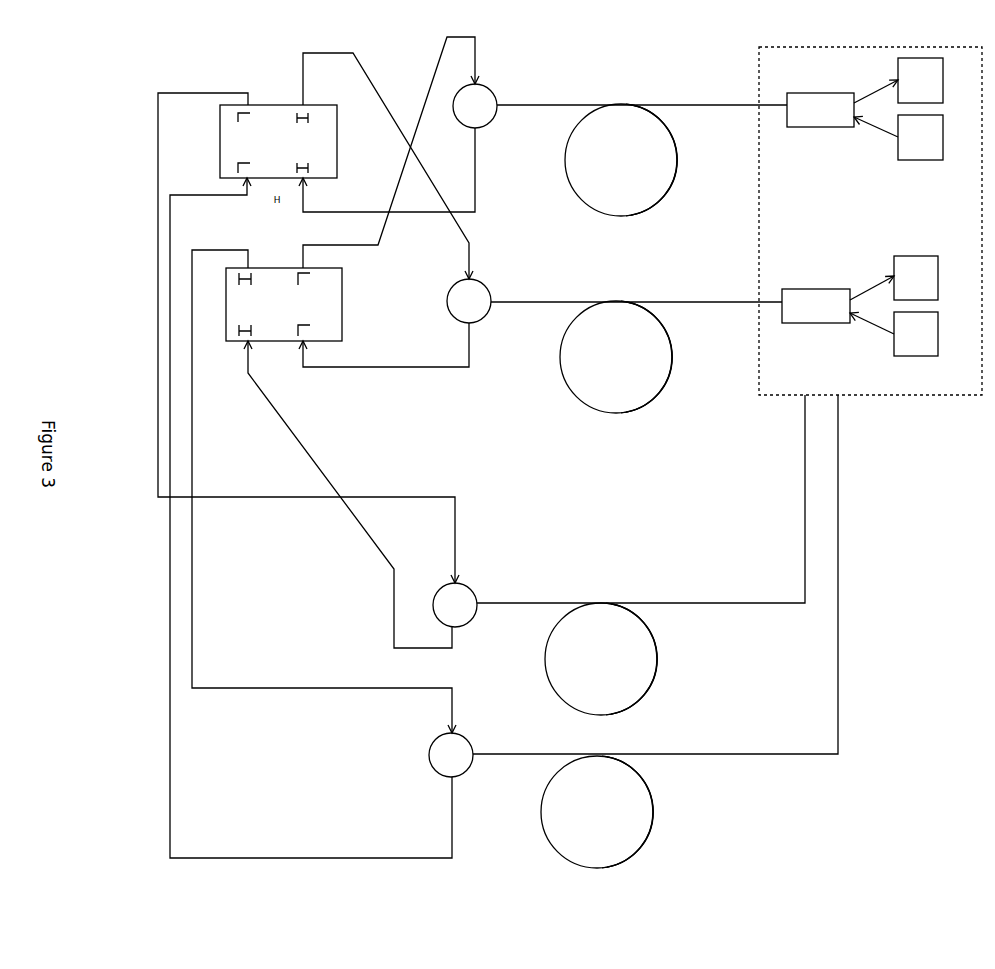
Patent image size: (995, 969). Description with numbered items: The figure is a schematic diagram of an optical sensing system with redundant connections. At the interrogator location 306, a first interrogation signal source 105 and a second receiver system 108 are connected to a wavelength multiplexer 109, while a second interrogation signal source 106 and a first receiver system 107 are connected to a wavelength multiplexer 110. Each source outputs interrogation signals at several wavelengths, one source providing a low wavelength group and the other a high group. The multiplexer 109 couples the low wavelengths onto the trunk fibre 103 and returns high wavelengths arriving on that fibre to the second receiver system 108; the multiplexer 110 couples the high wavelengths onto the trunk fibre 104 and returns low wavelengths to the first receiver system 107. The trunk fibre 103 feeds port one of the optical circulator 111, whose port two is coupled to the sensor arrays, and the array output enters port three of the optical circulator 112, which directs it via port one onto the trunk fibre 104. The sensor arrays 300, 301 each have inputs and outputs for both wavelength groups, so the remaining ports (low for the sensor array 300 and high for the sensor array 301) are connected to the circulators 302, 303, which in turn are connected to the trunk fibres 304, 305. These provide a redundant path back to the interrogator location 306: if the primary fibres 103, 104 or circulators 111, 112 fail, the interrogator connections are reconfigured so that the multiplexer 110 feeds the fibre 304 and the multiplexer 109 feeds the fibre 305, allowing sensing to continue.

The trunk fibre 103 is at (616, 357).
The trunk fibre 104 is at (621, 160).
The first interrogation signal source 105 is at (894, 334).
The second interrogation signal source 106 is at (898, 137).
The first receiver system 107 is at (898, 80).
The second receiver system 108 is at (894, 278).
The wavelength multiplexer 109 is at (816, 306).
The wavelength multiplexer 110 is at (820, 110).
The optical circulator 111 is at (473, 300).
The optical circulator 112 is at (478, 105).
The sensor array 300 is at (278, 141).
The sensor array 301 is at (284, 304).
The circulator 302 is at (455, 755).
The circulator 303 is at (459, 605).
The trunk fibre 304 is at (601, 659).
The trunk fibre 305 is at (597, 812).
The interrogator location 306 is at (870, 221).